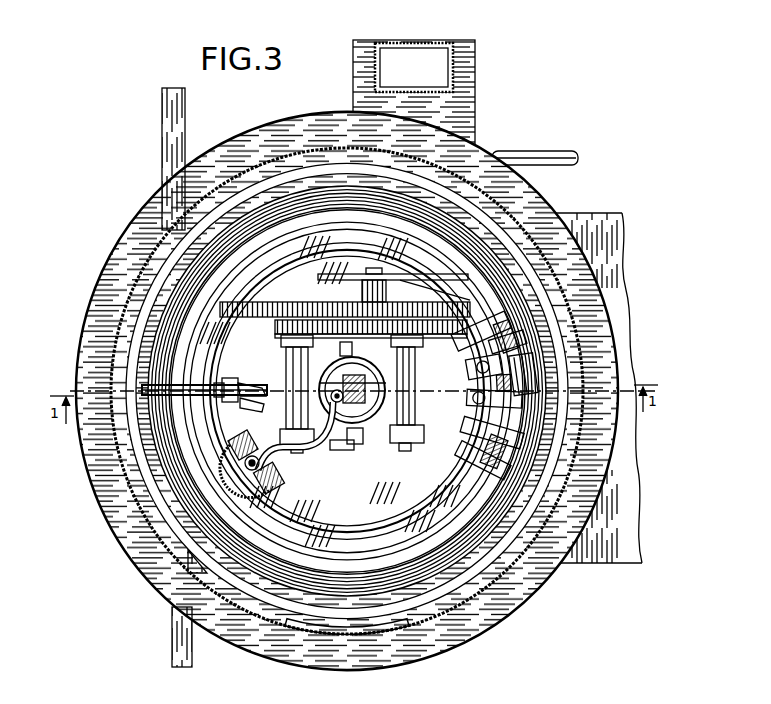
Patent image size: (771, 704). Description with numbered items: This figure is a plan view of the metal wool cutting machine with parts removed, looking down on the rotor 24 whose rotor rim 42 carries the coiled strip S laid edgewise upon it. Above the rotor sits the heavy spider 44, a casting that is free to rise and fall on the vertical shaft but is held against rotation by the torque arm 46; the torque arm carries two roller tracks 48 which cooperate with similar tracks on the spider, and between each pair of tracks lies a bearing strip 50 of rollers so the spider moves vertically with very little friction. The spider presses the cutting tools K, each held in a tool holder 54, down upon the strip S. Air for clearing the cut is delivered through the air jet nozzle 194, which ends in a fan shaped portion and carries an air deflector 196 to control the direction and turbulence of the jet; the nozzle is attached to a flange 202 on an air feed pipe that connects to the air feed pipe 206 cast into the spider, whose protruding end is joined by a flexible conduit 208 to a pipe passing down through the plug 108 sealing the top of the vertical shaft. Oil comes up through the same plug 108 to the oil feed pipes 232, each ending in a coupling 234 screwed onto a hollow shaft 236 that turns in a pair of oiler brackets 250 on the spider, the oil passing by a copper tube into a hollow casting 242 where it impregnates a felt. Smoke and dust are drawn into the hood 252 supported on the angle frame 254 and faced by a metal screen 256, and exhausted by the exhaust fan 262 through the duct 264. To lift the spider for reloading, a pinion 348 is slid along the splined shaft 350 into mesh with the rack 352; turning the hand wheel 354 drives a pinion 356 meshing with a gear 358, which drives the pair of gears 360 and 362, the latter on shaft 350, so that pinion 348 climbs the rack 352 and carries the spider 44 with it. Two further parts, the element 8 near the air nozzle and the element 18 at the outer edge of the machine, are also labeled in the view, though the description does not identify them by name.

The oil feed pipe 232 is at (282, 300).
The hand wheel 354 is at (370, 284).
The gear 358 is at (322, 297).
The pinion 356 is at (404, 328).
The tool holder 54 is at (489, 323).
The cutting tool K is at (540, 323).
The air deflector 196 is at (560, 356).
The strip S is at (547, 362).
The gear 360 is at (290, 332).
The shaft 236 is at (237, 386).
The coupling 234 is at (222, 384).
The oiler bracket 250 is at (252, 404).
The roller track 48 is at (346, 352).
The bearing strip 50 is at (360, 351).
The plug 108 is at (386, 380).
The gear 362 is at (469, 360).
The rack 352 is at (388, 395).
The rotor rim 42 is at (560, 364).
The hollow casting 242 is at (152, 393).
The flange 202 is at (486, 405).
The flexible conduit 208 is at (291, 436).
The pinion 348 is at (406, 427).
The air jet nozzle 194 is at (488, 432).
The rotor 24 is at (556, 417).
The air feed pipe 206 is at (276, 475).
The torque arm 46 is at (344, 452).
The splined shaft 350 is at (402, 436).
The frame 8 is at (478, 457).
The housing 18 is at (560, 485).
The spider 44 is at (346, 508).
The metal screen 256 is at (272, 648).
The angle frame 254 is at (428, 622).
The hood 252 is at (486, 624).
The duct 264 is at (446, 96).
The exhaust fan 262 is at (470, 103).